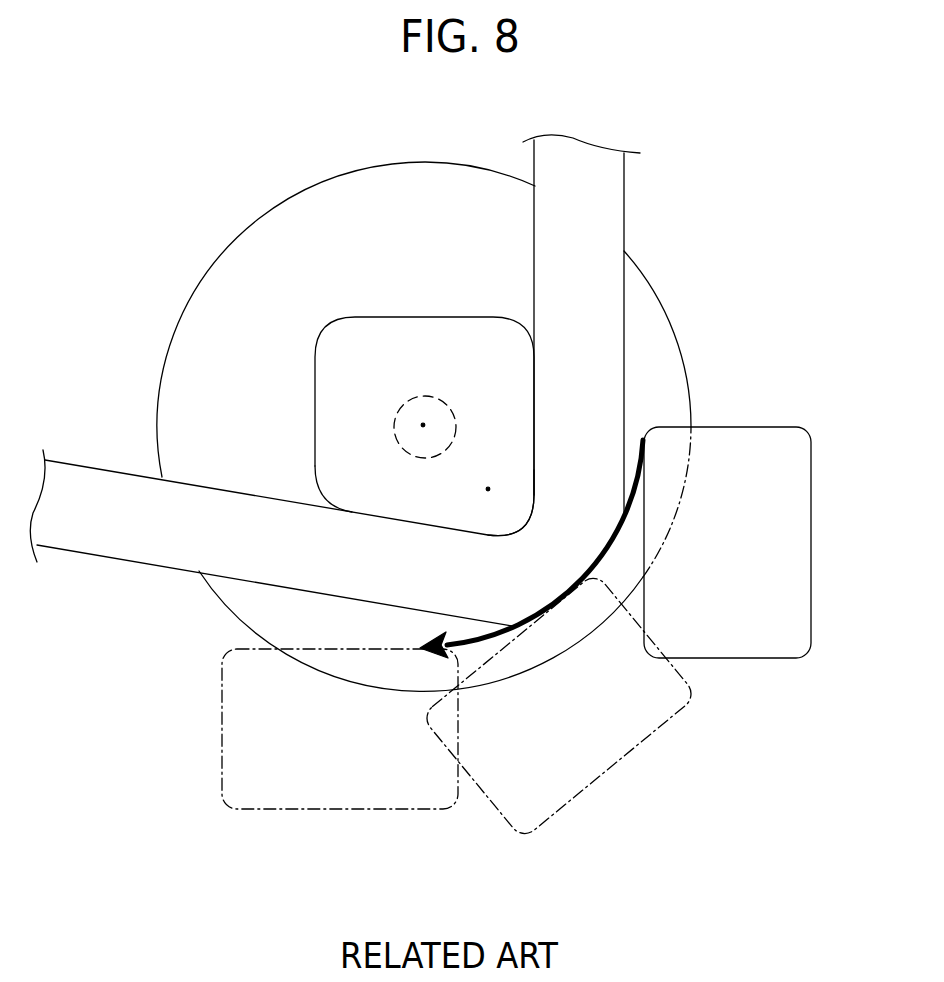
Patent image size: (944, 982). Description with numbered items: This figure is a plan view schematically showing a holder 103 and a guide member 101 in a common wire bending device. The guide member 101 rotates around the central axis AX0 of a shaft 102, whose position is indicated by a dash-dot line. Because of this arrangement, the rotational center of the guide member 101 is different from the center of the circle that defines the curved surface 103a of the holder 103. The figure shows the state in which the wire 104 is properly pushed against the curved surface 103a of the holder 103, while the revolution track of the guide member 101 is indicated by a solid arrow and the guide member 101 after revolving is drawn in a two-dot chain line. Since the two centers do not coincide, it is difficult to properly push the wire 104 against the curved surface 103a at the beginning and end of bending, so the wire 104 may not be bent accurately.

The guide member 101 is at (783, 522).
The shaft 102 is at (425, 396).
The holder 103 is at (298, 402).
The curved surface 103a is at (513, 511).
The wire 104 is at (613, 205).
The central axis AX0 is at (423, 425).